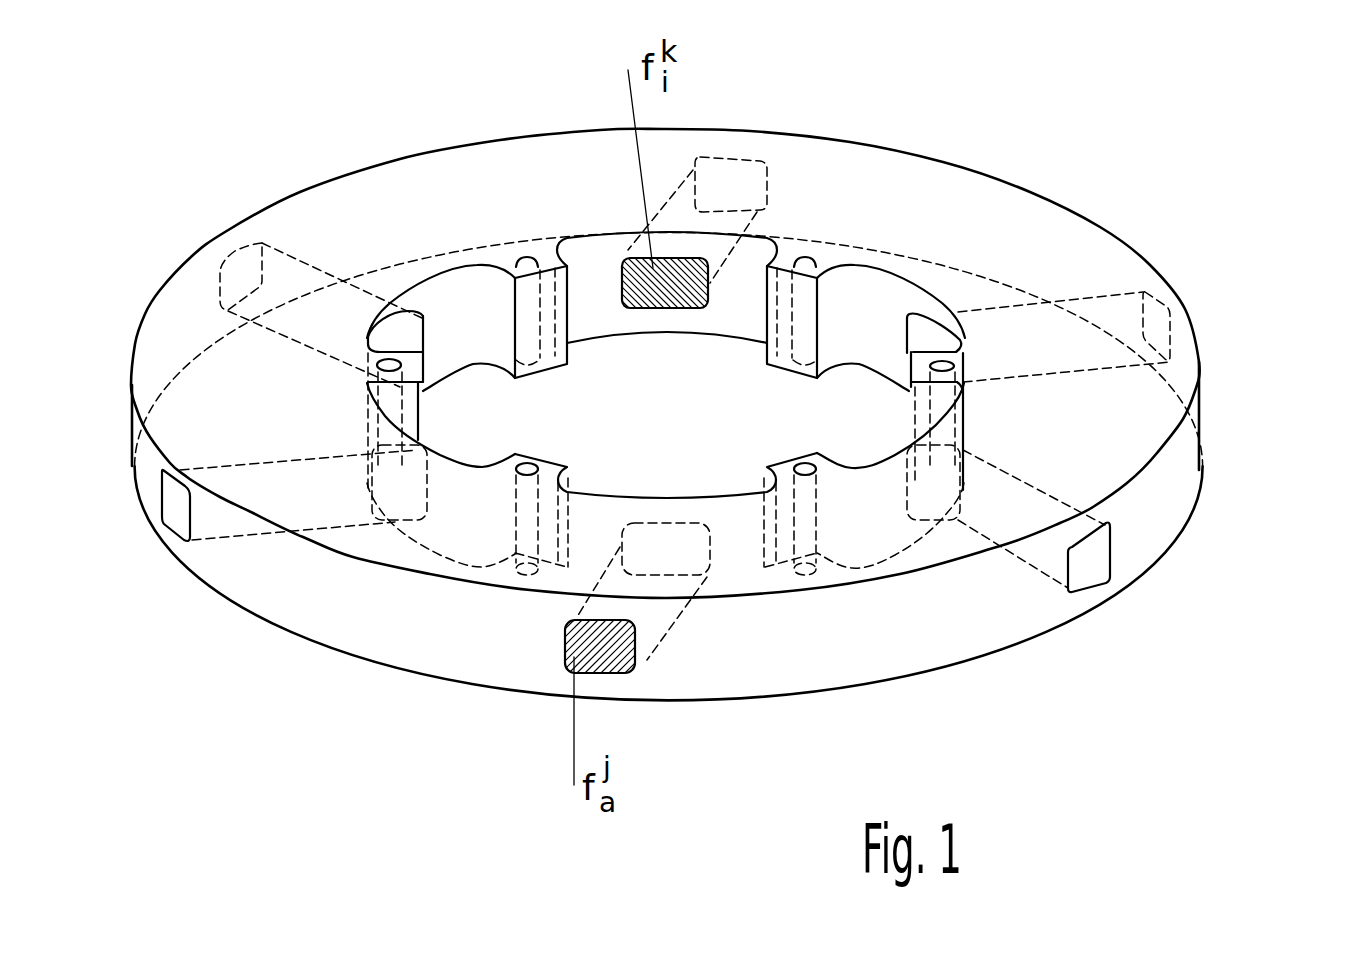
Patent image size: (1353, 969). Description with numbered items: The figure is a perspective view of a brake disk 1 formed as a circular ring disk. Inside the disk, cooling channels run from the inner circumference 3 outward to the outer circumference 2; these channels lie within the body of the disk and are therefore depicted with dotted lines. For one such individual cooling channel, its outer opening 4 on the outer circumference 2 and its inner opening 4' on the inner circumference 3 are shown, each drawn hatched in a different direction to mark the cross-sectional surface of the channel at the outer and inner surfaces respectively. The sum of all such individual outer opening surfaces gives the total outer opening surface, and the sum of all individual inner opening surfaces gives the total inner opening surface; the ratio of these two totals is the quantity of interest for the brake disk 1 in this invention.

The brake disk 1 is at (943, 163).
The outer circumference 2 is at (1205, 420).
The inner circumference 3 is at (920, 295).
The outer opening 4 is at (666, 465).
The inner opening 4' is at (696, 316).